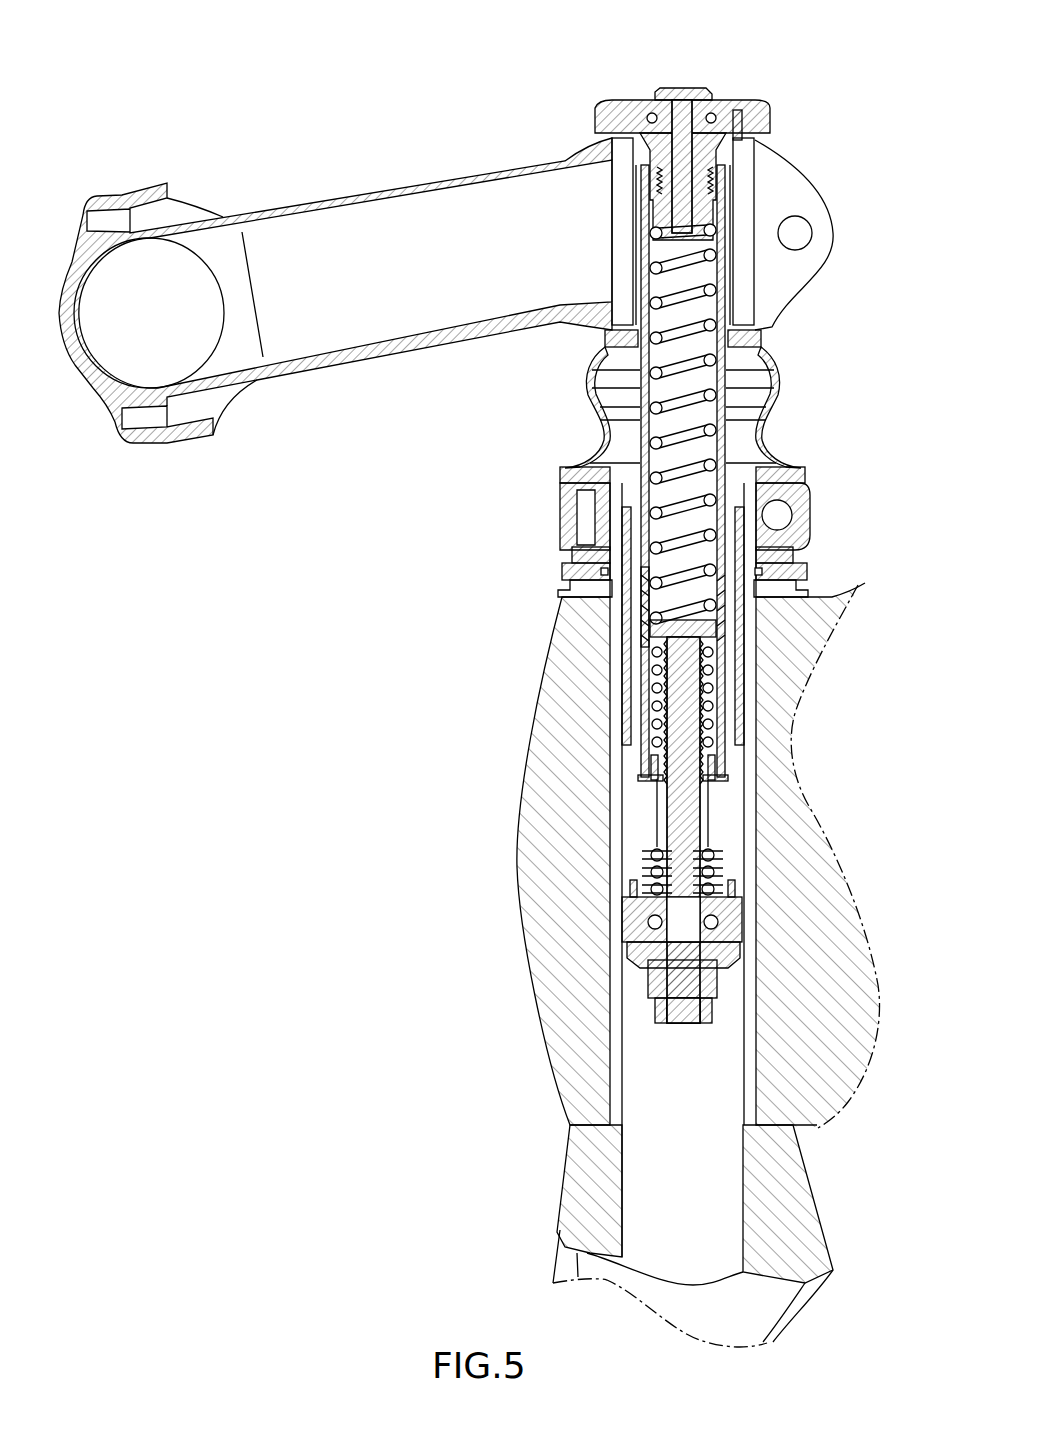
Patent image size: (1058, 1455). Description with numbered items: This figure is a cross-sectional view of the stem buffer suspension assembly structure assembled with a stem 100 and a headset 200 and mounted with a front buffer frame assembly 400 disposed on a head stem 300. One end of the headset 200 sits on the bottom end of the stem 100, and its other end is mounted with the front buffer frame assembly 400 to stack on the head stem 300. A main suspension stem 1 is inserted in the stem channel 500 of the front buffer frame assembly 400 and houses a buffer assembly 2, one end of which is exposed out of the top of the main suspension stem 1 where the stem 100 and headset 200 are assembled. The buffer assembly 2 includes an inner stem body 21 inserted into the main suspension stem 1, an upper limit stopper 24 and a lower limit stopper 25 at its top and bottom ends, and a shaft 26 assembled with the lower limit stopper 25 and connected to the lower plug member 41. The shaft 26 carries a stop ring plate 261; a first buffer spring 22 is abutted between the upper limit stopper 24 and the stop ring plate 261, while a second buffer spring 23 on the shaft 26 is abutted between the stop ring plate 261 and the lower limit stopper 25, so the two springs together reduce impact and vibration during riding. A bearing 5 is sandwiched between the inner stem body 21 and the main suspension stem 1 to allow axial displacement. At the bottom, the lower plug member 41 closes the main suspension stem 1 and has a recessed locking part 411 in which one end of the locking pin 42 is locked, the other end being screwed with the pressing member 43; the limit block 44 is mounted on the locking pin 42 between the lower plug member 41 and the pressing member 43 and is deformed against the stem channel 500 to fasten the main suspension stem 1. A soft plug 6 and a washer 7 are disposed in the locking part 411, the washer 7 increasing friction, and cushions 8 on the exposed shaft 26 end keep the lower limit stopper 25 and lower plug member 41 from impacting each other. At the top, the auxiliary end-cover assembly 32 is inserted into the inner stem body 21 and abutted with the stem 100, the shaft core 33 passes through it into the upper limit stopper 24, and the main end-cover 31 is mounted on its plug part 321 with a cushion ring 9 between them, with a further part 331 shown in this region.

The stem 100 is at (332, 177).
The headset 200 is at (642, 452).
The head stem 300 is at (514, 930).
The front buffer frame assembly 400 is at (560, 1178).
The stem channel 500 is at (650, 1178).
The main suspension stem 1 is at (737, 807).
The buffer assembly 2 is at (650, 787).
The bearing 5 is at (630, 672).
The soft plug 6 is at (650, 935).
The washer 7 is at (640, 922).
The cushion 8 is at (718, 849).
The cushion ring 9 is at (722, 128).
The inner stem body 21 is at (727, 397).
The first buffer spring 22 is at (707, 465).
The second buffer spring 23 is at (645, 710).
The upper limit stopper 24 is at (700, 258).
The lower limit stopper 25 is at (660, 840).
The shaft 26 is at (660, 850).
The stop ring plate 261 is at (645, 620).
The main end-cover 31 is at (677, 90).
The auxiliary end-cover assembly 32 is at (590, 133).
The plug part 321 is at (646, 120).
The shaft core 33 is at (697, 190).
The bolt seat 331 is at (640, 103).
The lower plug member 41 is at (733, 882).
The locking part 411 is at (740, 935).
The locking pin 42 is at (683, 1007).
The pressing member 43 is at (650, 1008).
The limit block 44 is at (648, 982).